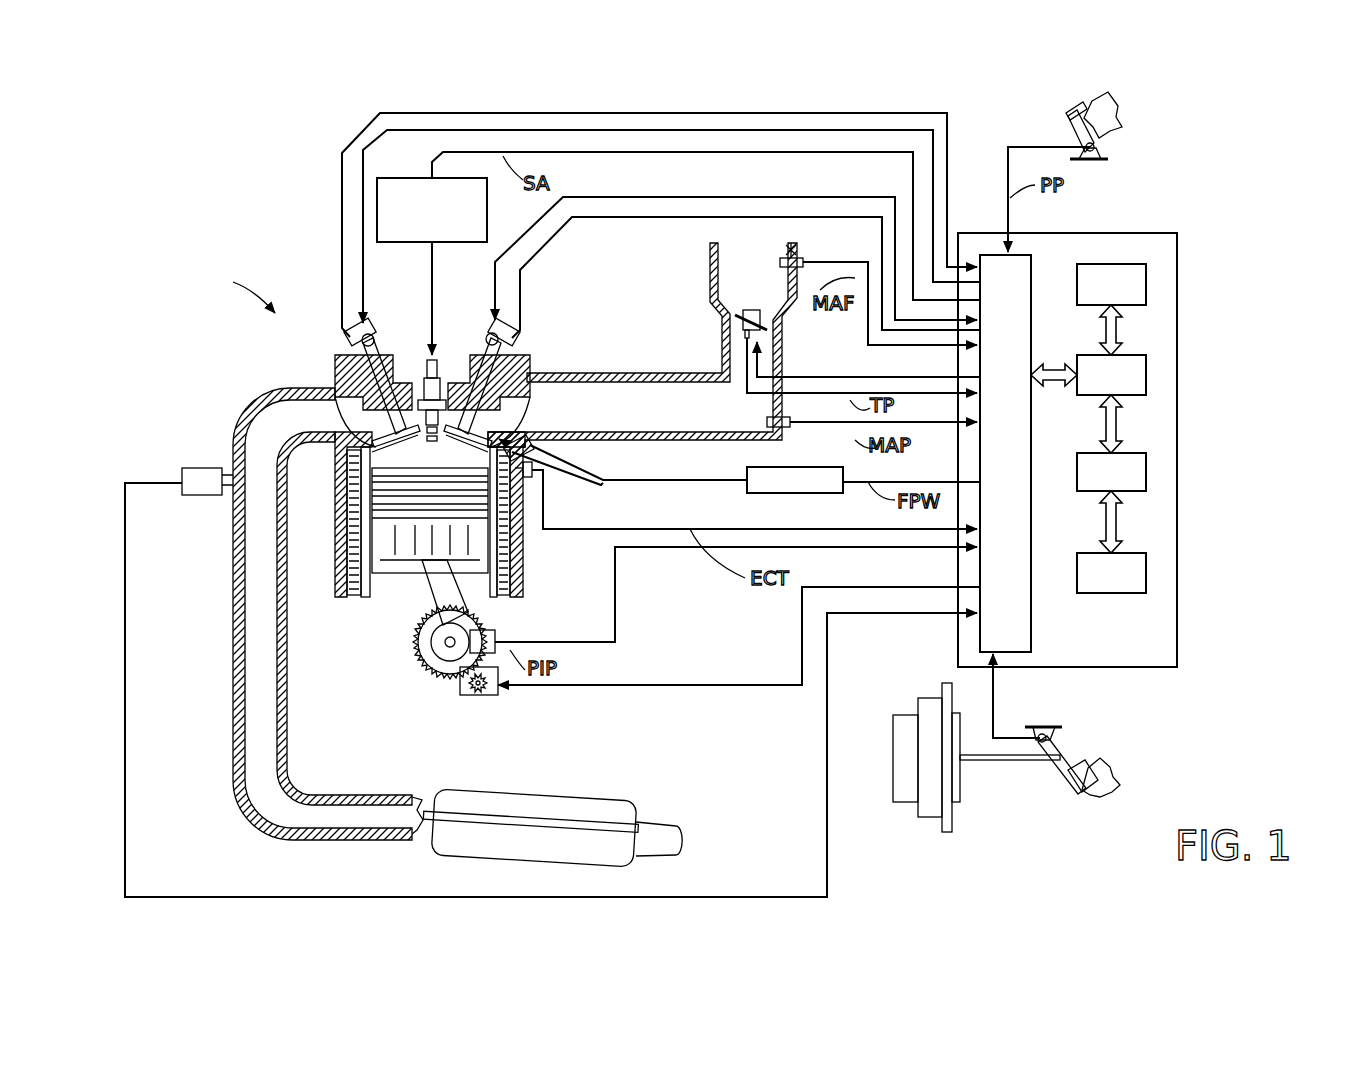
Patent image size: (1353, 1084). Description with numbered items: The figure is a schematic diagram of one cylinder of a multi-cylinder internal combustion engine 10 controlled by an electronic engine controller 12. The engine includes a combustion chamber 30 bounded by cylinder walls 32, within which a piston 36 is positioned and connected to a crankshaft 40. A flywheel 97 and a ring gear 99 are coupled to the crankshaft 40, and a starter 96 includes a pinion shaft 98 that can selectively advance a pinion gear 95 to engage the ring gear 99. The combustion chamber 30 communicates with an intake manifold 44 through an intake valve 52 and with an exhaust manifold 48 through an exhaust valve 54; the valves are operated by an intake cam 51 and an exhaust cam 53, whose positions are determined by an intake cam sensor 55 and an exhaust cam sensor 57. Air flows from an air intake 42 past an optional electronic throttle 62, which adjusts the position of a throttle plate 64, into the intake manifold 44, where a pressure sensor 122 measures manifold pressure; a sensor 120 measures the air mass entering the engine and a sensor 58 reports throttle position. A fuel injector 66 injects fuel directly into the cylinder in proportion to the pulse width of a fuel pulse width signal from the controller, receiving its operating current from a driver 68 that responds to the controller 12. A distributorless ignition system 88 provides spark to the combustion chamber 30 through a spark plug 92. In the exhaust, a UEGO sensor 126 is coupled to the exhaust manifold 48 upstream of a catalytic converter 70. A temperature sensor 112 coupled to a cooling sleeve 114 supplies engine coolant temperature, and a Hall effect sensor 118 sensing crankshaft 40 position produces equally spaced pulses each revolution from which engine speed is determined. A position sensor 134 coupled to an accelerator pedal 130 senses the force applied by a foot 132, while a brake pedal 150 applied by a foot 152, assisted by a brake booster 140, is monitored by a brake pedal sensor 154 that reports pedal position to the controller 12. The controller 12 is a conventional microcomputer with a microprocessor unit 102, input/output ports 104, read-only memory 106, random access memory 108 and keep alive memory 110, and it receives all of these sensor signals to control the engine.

The internal combustion engine 10 is at (240, 288).
The electronic engine controller 12 is at (1168, 233).
The combustion chamber 30 is at (335, 580).
The cylinder walls 32 is at (372, 560).
The piston 36 is at (415, 555).
The crankshaft 40 is at (435, 662).
The air intake 42 is at (765, 289).
The intake manifold 44 is at (702, 421).
The exhaust manifold 48 is at (318, 424).
The intake cam 51 is at (490, 325).
The intake valve 52 is at (470, 415).
The exhaust cam 53 is at (375, 325).
The exhaust valve 54 is at (372, 415).
The intake cam sensor 55 is at (508, 340).
The exhaust cam sensor 57 is at (352, 338).
The throttle position sensor 58 is at (745, 335).
The electronic throttle 62 is at (765, 322).
The throttle plate 64 is at (743, 318).
The fuel injector 66 is at (540, 460).
The driver 68 is at (765, 493).
The catalytic converter 70 is at (450, 792).
The distributorless ignition system 88 is at (390, 178).
The spark plug 92 is at (440, 360).
The pinion gear 95 is at (480, 695).
The starter 96 is at (490, 697).
The flywheel 97 is at (433, 645).
The pinion shaft 98 is at (470, 690).
The ring gear 99 is at (443, 668).
The microprocessor unit 102 is at (1146, 370).
The input/output ports 104 is at (1025, 262).
The read-only memory 106 is at (1146, 282).
The random access memory 108 is at (1146, 470).
The keep alive memory 110 is at (1146, 570).
The temperature sensor 112 is at (535, 478).
The cooling sleeve 114 is at (505, 545).
The Hall effect sensor 118 is at (495, 632).
The air mass sensor 120 is at (797, 258).
The pressure sensor 122 is at (785, 427).
The Universal Exhaust Gas Oxygen (UEGO) sensor 126 is at (182, 476).
The accelerator pedal 130 is at (1072, 122).
The foot 132 is at (1118, 108).
The position sensor 134 is at (1105, 150).
The brake booster 140 is at (893, 800).
The brake pedal 150 is at (1070, 790).
The foot 152 is at (1105, 762).
The brake pedal sensor 154 is at (1038, 738).